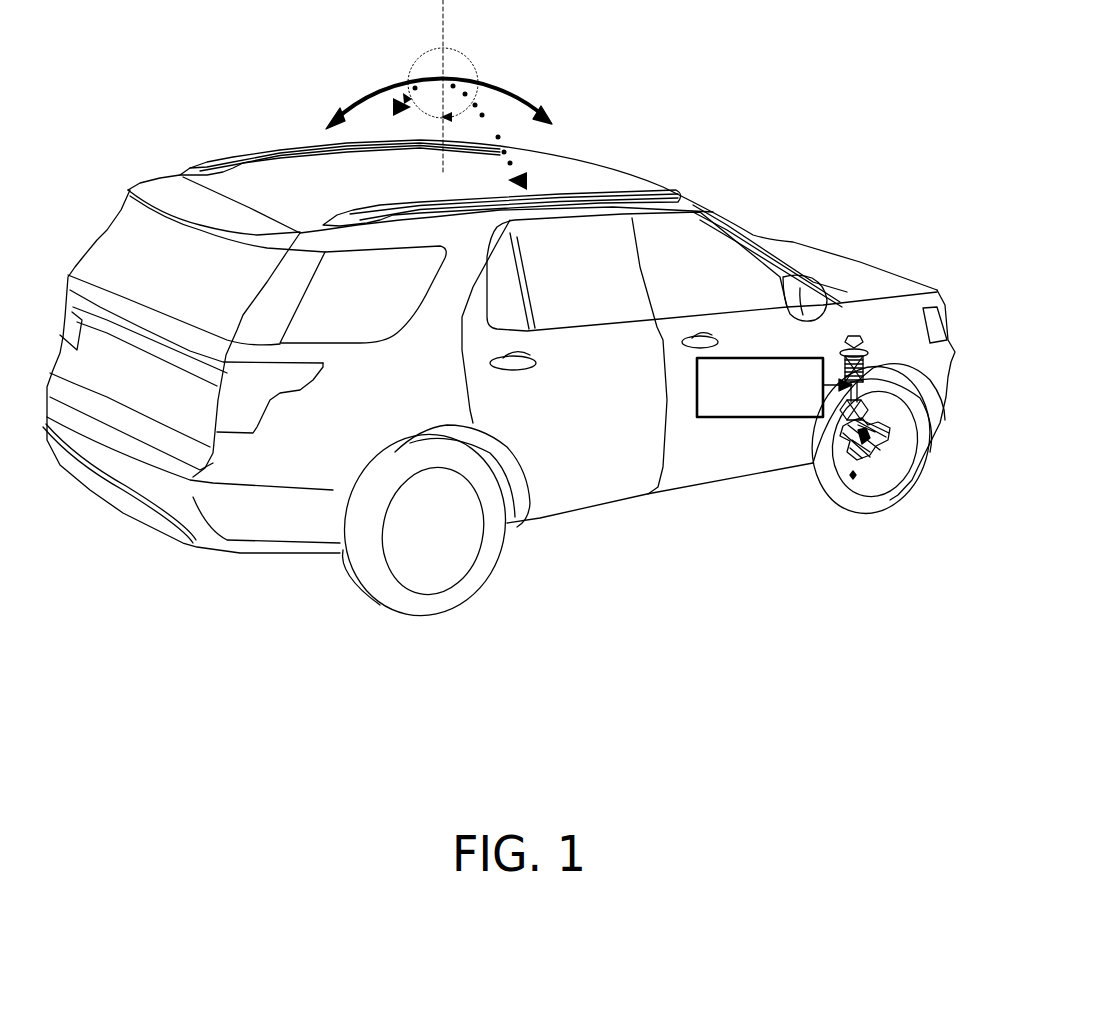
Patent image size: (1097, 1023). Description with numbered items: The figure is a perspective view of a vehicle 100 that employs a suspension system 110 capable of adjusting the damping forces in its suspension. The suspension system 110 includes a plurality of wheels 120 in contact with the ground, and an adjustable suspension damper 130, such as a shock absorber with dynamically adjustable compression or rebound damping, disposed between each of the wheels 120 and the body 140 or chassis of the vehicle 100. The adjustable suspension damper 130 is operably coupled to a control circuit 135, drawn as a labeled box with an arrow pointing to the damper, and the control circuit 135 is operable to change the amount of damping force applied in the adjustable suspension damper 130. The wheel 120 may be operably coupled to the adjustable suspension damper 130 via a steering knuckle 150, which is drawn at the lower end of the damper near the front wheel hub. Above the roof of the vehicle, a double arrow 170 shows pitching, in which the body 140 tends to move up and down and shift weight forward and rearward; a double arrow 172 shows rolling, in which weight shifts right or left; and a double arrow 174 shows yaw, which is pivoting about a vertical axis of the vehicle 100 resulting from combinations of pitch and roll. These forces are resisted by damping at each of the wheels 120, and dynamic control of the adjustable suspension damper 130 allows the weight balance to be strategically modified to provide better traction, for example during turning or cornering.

The vehicle 100 is at (688, 128).
The suspension system 110 is at (853, 480).
The wheels 120 is at (460, 590).
The adjustable suspension damper 130 is at (853, 337).
The control circuit 135 is at (747, 357).
The body 140 is at (288, 511).
The steering knuckle 150 is at (853, 448).
The double arrow 170 is at (370, 100).
The double arrow 172 is at (490, 127).
The double arrow 174 is at (467, 58).